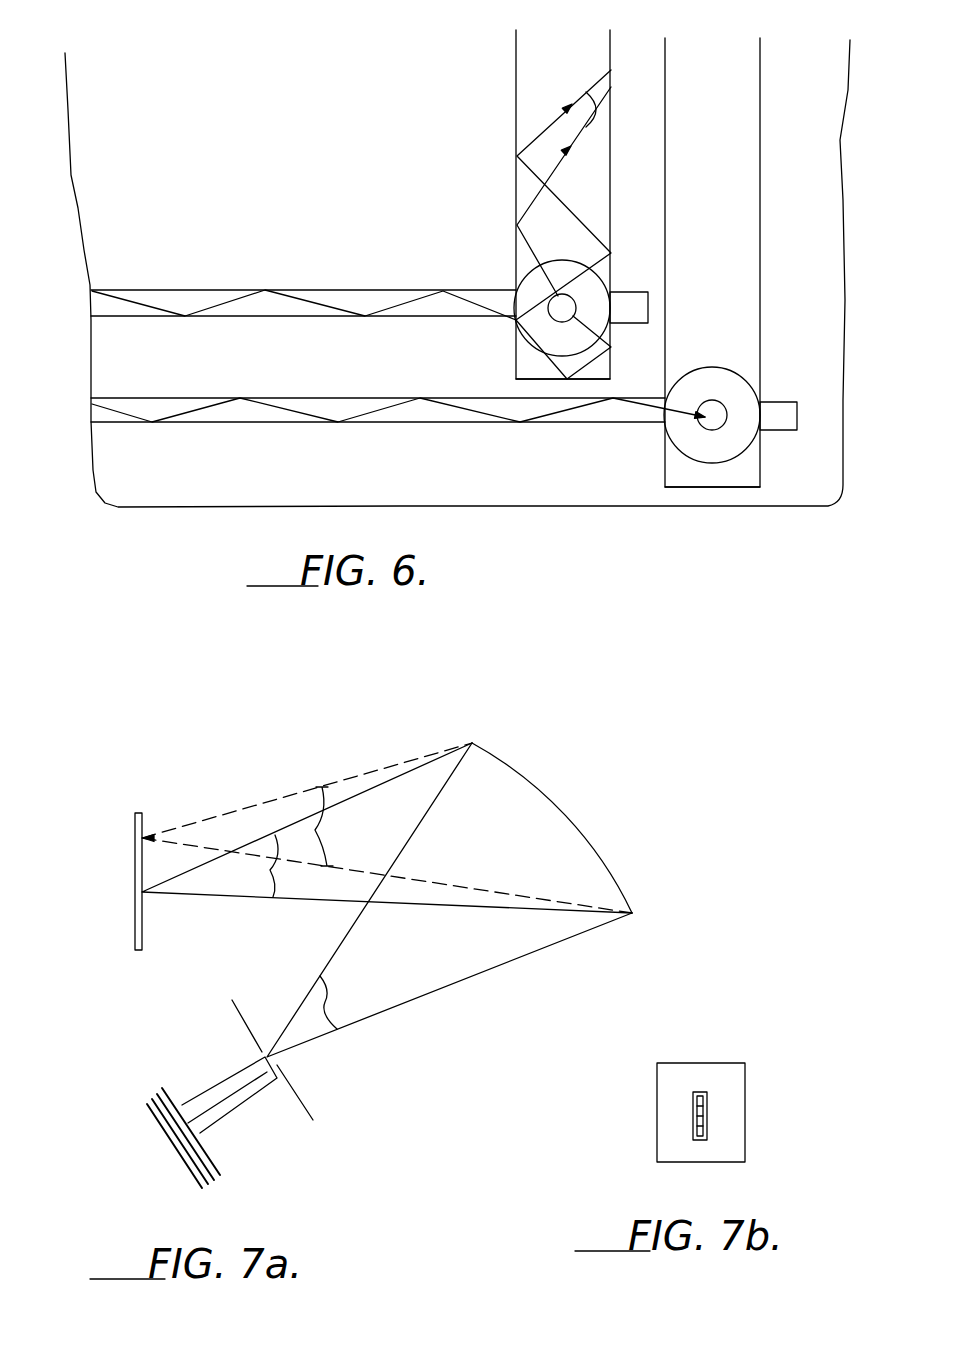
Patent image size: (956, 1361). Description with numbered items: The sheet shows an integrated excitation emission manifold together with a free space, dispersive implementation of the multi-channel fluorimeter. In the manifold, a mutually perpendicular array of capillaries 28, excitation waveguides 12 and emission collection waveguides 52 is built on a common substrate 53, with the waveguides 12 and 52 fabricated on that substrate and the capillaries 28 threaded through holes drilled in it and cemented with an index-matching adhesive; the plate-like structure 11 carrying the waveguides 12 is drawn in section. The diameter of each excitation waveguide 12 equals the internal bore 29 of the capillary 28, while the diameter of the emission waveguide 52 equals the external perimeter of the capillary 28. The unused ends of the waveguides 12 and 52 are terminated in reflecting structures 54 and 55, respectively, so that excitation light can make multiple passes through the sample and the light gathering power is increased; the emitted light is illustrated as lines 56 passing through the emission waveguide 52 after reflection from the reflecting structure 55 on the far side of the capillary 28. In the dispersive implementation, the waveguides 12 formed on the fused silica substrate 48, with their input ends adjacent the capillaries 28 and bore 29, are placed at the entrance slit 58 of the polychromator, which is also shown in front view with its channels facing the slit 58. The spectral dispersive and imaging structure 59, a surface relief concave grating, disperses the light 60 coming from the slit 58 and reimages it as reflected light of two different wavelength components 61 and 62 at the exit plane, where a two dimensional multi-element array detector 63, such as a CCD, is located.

In FIG. 6, the light guide plate 11 is at (138, 303).
In FIG. 6, the excitation waveguides 12 is at (201, 291).
In FIG. 7B, the excitation waveguides 12 is at (720, 1133).
In FIG. 6, the capillaries 28 is at (533, 268).
In FIG. 7A, the capillaries 28 is at (180, 1157).
In FIG. 6, the internal bore 29 is at (543, 304).
In FIG. 7A, the internal bore 29 is at (150, 1113).
In FIG. 7A, the fused silica substrate 48 is at (235, 1123).
In FIG. 6, the emission collection waveguides 52 is at (516, 58).
In FIG. 6, the common substrate 53 is at (77, 226).
In FIG. 6, the reflecting structure 54 is at (648, 276).
In FIG. 6, the reflecting structure 55 is at (526, 378).
In FIG. 6, the emitted light lines 56 is at (603, 117).
In FIG. 7A, the entrance slit 58 is at (315, 1095).
In FIG. 7B, the entrance slit 58 is at (754, 1067).
In FIG. 7A, the spectral dispersive and imaging structure 59 is at (583, 809).
In FIG. 7A, the light 60 is at (449, 900).
In FIG. 7A, the first wavelength component 61 is at (387, 828).
In FIG. 7A, the second wavelength component 62 is at (387, 828).
In FIG. 7A, the two dimensional multi-element array detector 63 is at (135, 864).